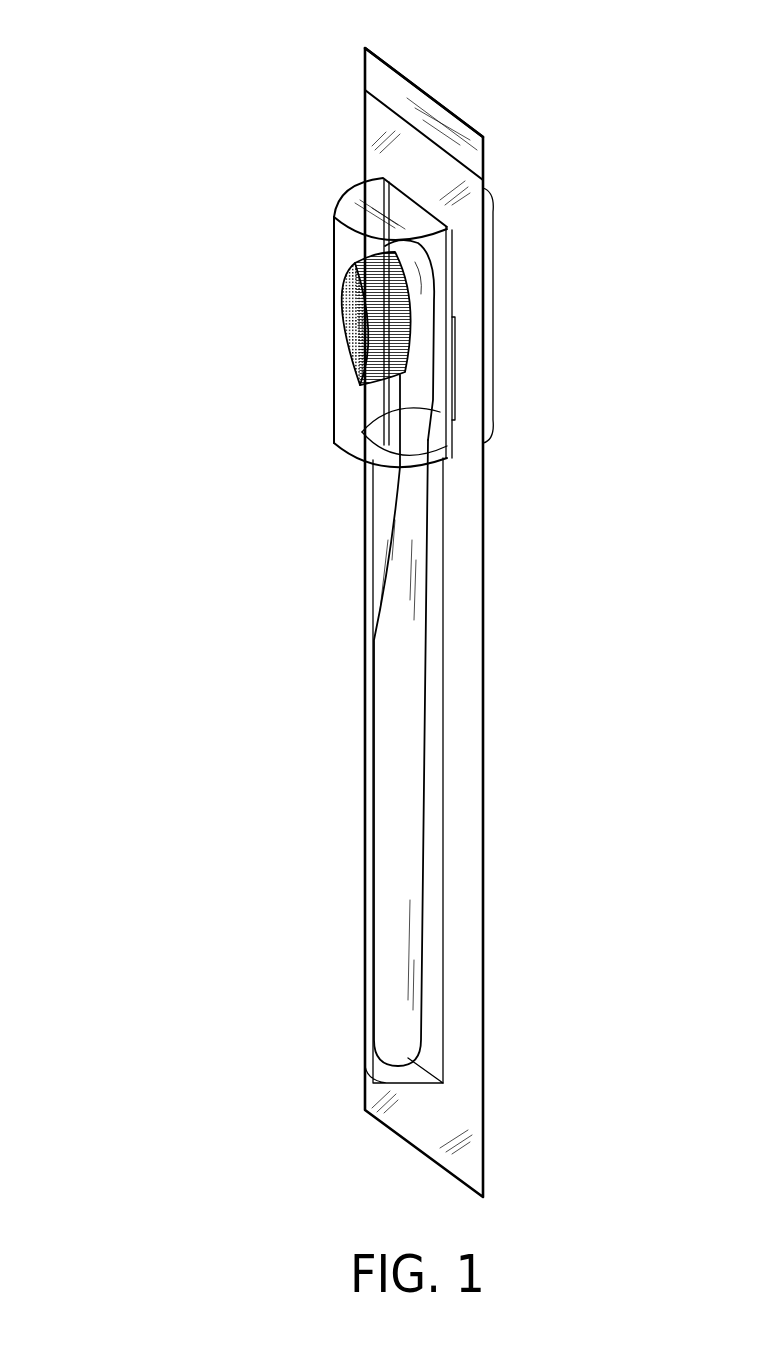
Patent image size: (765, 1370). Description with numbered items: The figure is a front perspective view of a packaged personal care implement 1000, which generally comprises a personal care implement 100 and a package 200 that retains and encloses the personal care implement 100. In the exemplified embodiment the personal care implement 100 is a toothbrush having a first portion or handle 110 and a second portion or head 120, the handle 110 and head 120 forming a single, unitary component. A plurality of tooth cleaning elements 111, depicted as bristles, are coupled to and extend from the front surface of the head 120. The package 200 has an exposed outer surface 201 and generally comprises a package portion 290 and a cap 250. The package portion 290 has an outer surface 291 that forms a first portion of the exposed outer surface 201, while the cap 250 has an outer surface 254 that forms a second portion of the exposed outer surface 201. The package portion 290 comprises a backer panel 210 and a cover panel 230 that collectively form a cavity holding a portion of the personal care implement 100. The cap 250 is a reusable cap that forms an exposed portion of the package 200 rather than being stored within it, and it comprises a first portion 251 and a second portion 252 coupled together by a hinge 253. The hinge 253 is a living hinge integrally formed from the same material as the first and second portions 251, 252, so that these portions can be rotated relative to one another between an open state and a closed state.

The packaged personal care implement 1000 is at (138, 156).
The personal care implement 100 is at (434, 1001).
The handle 110 is at (388, 784).
The tooth cleaning elements 111 is at (352, 322).
The head 120 is at (418, 314).
The package 200 is at (494, 746).
The exposed outer surface 201 is at (470, 1068).
The backer panel 210 is at (430, 110).
The cover panel 230 is at (476, 197).
The cap 250 is at (343, 249).
The first portion 251 is at (342, 415).
The second portion 252 is at (496, 243).
The hinge 253 is at (456, 411).
The outer surface 254 is at (348, 393).
The package portion 290 is at (361, 1089).
The outer surface 291 is at (463, 792).